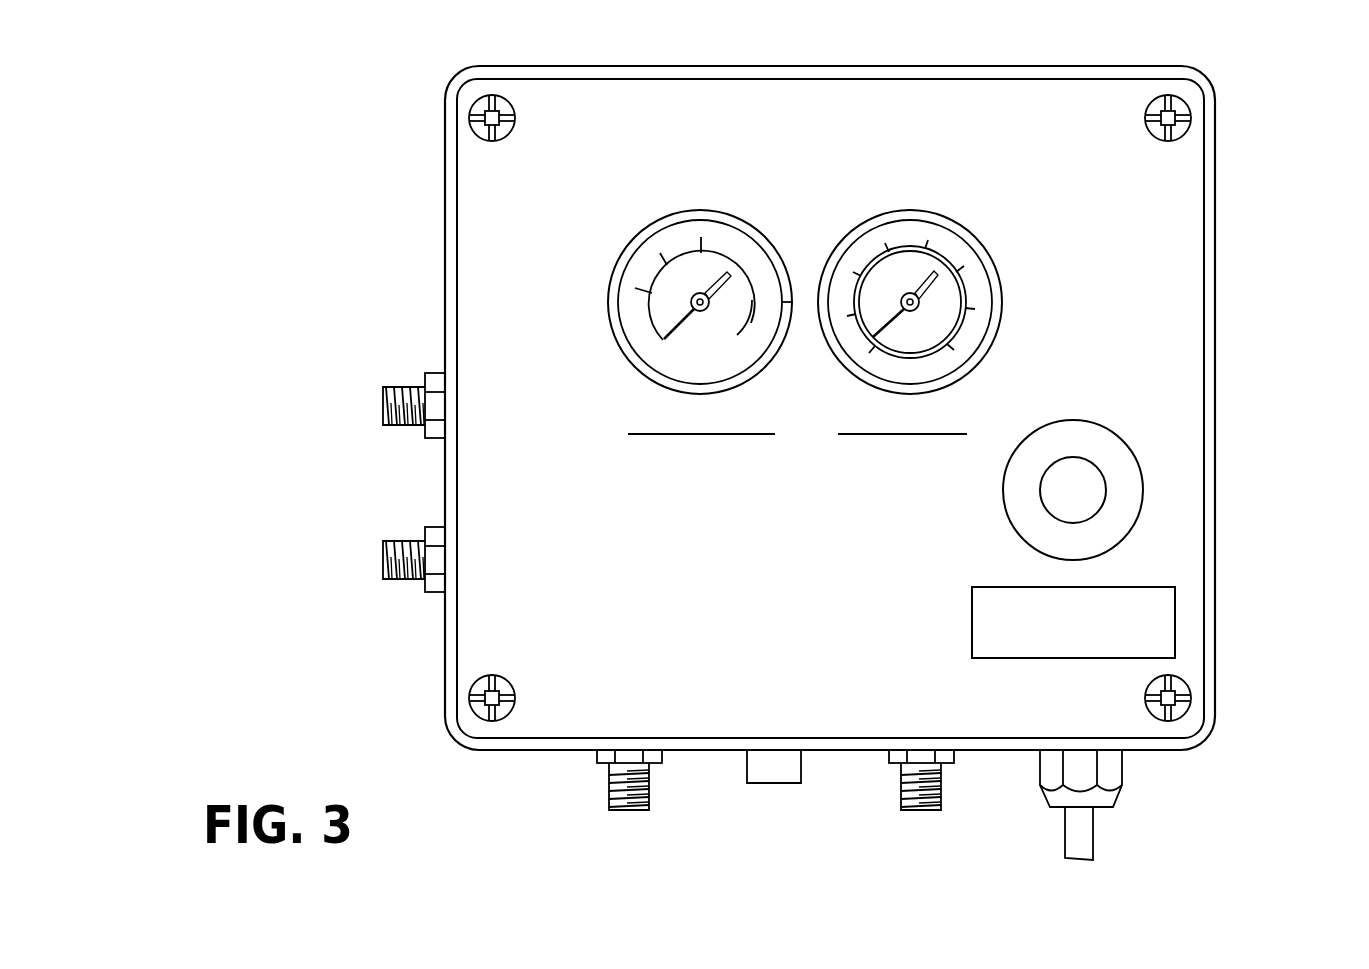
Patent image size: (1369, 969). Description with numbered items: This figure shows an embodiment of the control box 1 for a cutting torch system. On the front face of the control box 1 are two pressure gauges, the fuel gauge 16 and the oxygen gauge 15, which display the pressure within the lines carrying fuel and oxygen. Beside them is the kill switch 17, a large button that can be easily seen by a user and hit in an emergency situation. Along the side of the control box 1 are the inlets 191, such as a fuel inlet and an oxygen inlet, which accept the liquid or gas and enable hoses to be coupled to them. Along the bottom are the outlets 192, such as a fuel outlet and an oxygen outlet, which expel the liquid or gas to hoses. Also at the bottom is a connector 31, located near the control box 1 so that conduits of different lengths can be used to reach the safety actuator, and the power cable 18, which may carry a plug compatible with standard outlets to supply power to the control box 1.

The control box 1 is at (365, 212).
The oxygen gauge 15 is at (1000, 286).
The fuel gauge 16 is at (700, 210).
The kill switch 17 is at (1142, 508).
The power cable 18 is at (1093, 833).
The connector 31 is at (772, 783).
The inlets 191 is at (385, 405).
The outlets 192 is at (628, 810).